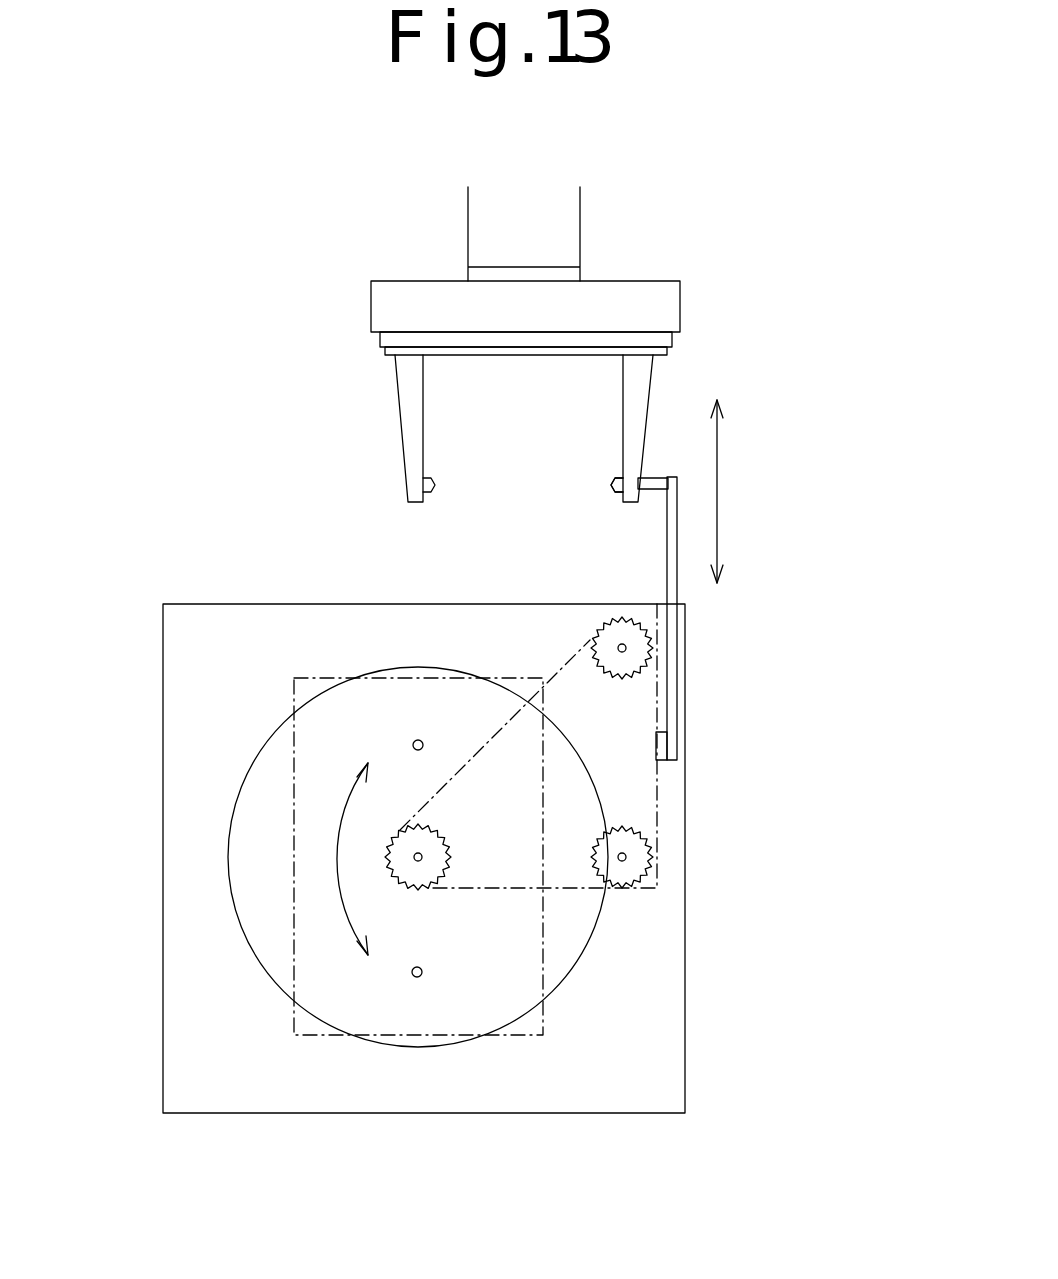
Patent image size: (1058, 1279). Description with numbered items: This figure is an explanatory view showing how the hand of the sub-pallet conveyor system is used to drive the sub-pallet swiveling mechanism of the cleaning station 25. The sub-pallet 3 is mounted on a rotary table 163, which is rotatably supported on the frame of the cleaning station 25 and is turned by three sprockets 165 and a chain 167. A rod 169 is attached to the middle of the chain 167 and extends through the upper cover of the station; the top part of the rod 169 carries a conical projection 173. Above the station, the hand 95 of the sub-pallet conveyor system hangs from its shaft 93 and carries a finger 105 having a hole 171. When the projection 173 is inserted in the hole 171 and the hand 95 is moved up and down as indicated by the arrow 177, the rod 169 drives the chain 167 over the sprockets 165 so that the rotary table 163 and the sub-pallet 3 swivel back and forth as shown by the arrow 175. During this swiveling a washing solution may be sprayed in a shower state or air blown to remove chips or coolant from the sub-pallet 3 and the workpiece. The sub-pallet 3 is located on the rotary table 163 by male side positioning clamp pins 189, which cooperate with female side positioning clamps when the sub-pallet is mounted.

The sub-pallet 3 is at (324, 678).
The cleaning station 25 is at (180, 950).
The shaft 93 is at (556, 228).
The hand 95 is at (712, 255).
The finger 105 is at (632, 402).
The rotary table 163 is at (572, 933).
The sprockets 165 is at (640, 857).
The chain 167 is at (655, 782).
The rod 169 is at (675, 567).
The hole 171 is at (625, 505).
The conical projection 173 is at (653, 477).
The arrow 175 is at (335, 838).
The arrow 177 is at (717, 495).
The male side positioning clamp pins 189 is at (422, 978).